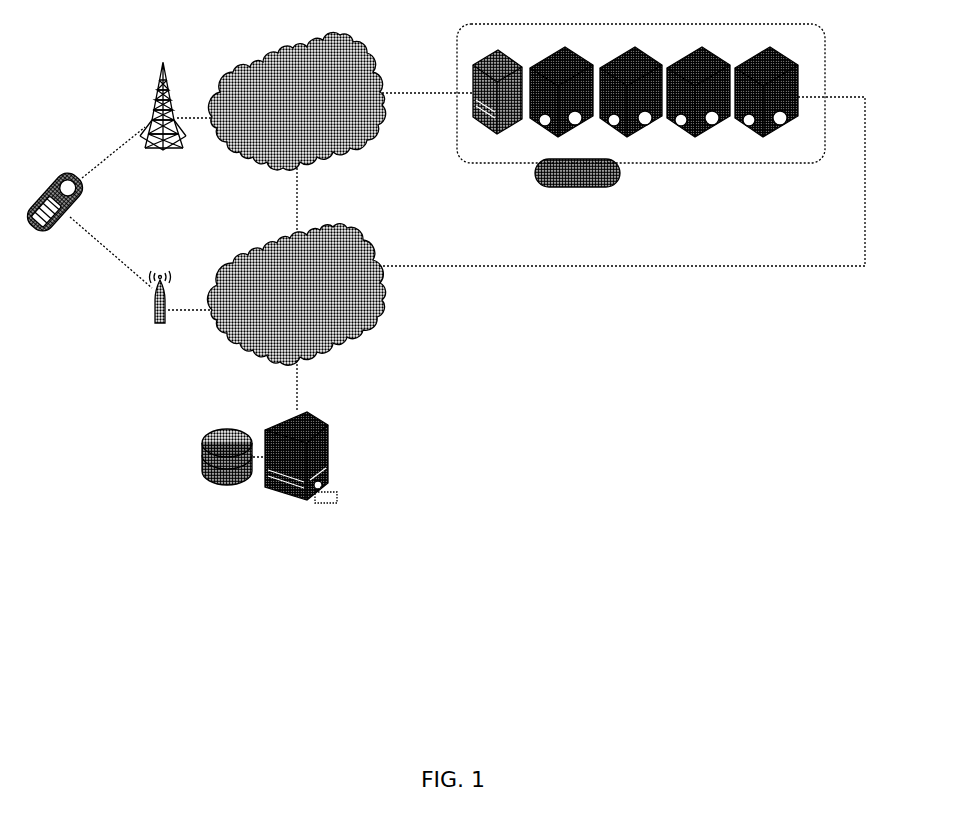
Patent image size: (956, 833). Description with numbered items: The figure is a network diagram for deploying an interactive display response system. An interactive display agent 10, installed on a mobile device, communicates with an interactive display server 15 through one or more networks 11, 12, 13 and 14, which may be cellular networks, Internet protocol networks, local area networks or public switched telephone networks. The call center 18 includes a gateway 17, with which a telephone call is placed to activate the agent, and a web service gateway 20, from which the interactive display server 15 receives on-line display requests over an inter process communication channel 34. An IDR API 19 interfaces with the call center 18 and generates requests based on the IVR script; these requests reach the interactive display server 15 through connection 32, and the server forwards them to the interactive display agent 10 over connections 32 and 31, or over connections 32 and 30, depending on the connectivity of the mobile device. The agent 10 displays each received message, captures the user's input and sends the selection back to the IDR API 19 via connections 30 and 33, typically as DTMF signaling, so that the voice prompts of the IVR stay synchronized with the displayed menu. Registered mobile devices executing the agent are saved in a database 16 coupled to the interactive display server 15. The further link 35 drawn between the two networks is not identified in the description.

The interactive display agent 10 is at (55, 207).
The network 11 is at (163, 117).
The network 12 is at (160, 307).
The network 13 is at (297, 101).
The network 14 is at (296, 295).
The interactive display server 15 is at (301, 466).
The database 16 is at (233, 466).
The gateway 17 is at (497, 102).
The call center 18 is at (641, 93).
The IDR API 19 is at (577, 173).
The web service gateway 20 is at (766, 103).
The connection 30 is at (113, 152).
The connection 31 is at (111, 252).
The inter process communication channel 32 is at (309, 386).
The connection 33 is at (427, 84).
The inter process communication channel 34 is at (621, 192).
The network link 35 is at (296, 199).